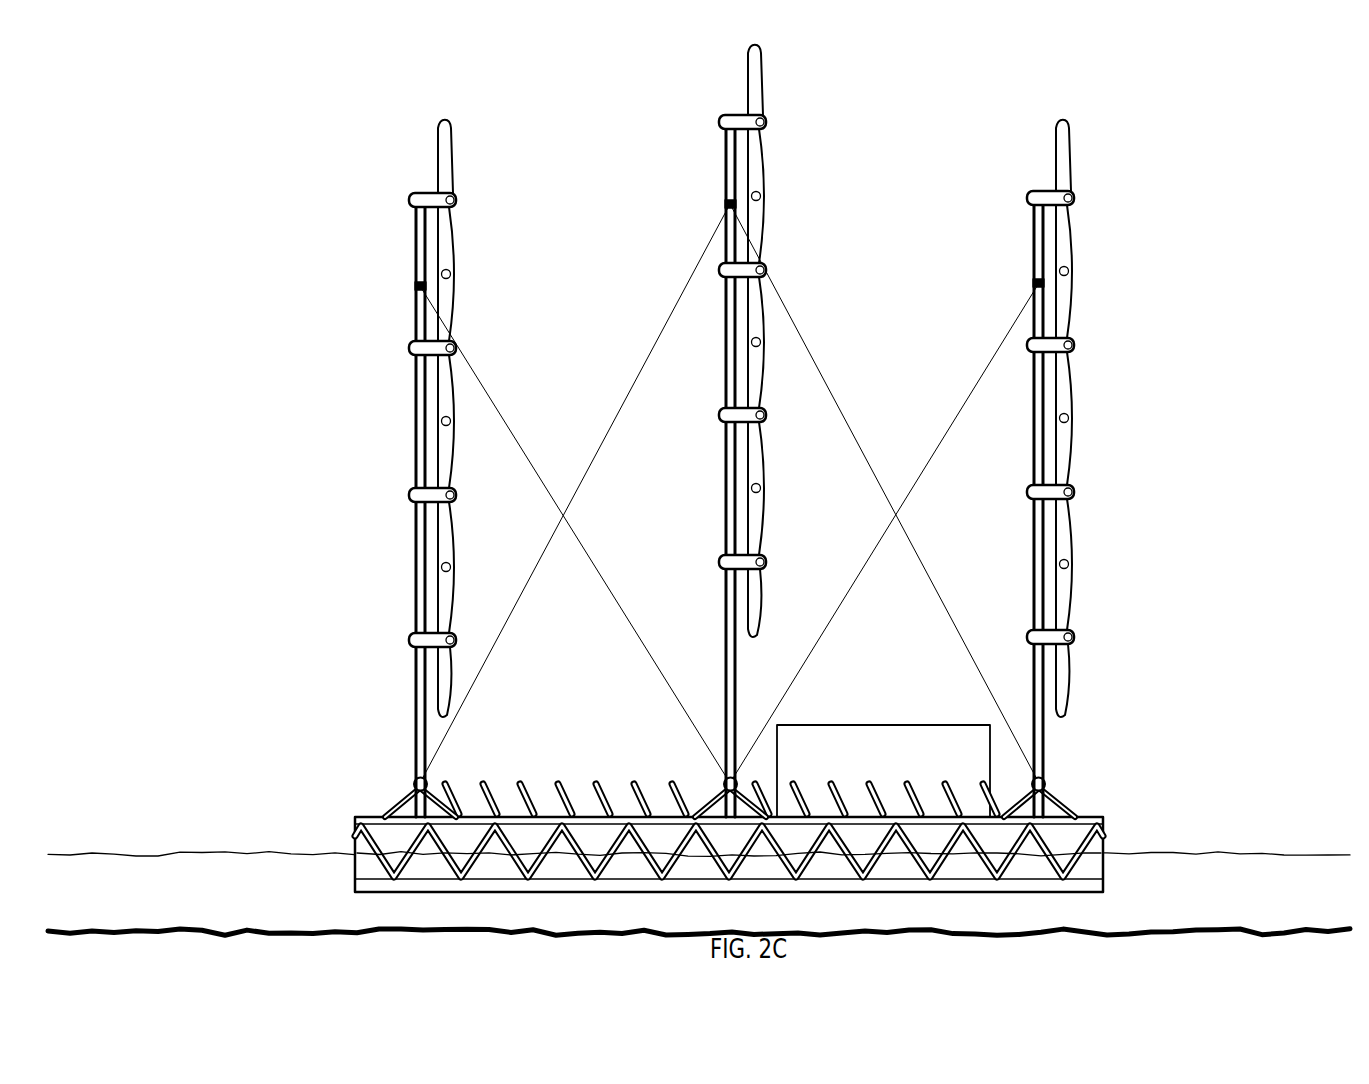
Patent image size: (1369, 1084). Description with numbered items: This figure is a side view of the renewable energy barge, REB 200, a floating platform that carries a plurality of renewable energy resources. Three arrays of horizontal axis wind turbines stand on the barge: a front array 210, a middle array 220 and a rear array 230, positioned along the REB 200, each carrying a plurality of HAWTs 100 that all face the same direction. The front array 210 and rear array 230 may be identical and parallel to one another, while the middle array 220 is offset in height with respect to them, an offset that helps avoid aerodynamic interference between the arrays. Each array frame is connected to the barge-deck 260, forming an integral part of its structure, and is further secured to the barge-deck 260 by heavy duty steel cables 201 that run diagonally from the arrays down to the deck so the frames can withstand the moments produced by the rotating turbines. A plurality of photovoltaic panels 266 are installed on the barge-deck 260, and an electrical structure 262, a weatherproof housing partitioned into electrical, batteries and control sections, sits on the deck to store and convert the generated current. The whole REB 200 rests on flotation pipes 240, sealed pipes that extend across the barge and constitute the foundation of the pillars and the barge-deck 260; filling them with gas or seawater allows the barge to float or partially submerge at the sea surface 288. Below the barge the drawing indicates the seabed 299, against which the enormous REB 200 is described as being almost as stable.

The horizontal axis wind turbine 100 is at (435, 152).
The renewable energy barge 200 is at (1250, 190).
The heavy duty steel cables 201 is at (668, 330).
The front array 210 is at (1000, 282).
The middle array 220 is at (705, 210).
The rear array 230 is at (392, 285).
The flotation pipes 240 is at (1105, 885).
The barge-deck 260 is at (1093, 812).
The electrical structure 262 is at (878, 724).
The photovoltaic panels 266 is at (500, 768).
The sea surface 288 is at (200, 852).
The sea floor 299 is at (245, 930).